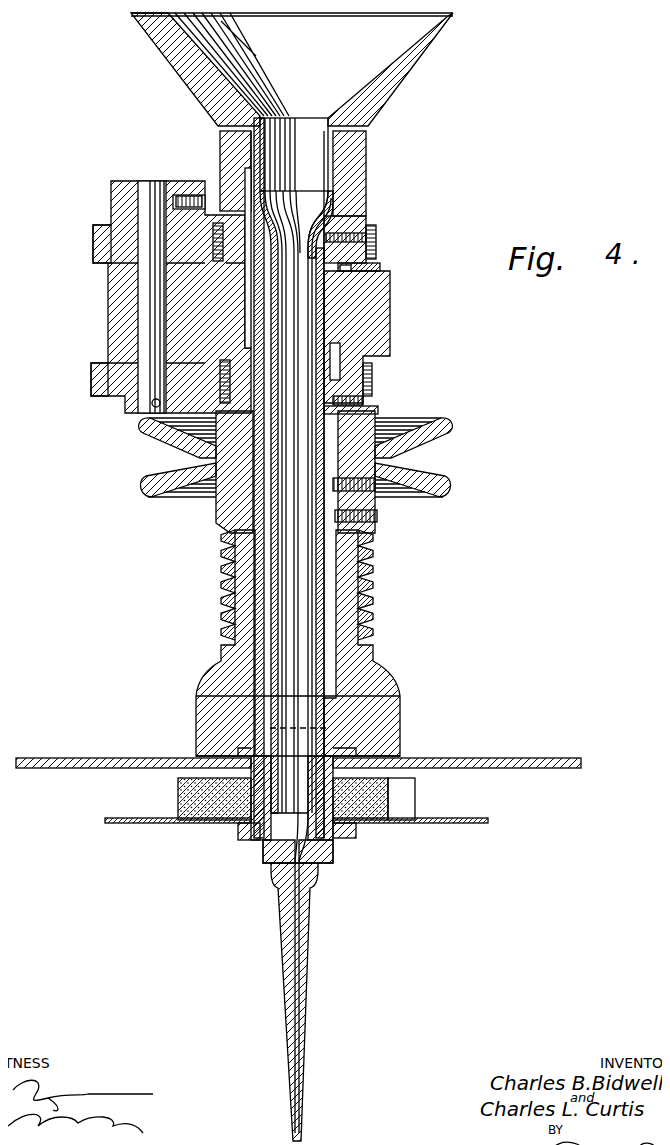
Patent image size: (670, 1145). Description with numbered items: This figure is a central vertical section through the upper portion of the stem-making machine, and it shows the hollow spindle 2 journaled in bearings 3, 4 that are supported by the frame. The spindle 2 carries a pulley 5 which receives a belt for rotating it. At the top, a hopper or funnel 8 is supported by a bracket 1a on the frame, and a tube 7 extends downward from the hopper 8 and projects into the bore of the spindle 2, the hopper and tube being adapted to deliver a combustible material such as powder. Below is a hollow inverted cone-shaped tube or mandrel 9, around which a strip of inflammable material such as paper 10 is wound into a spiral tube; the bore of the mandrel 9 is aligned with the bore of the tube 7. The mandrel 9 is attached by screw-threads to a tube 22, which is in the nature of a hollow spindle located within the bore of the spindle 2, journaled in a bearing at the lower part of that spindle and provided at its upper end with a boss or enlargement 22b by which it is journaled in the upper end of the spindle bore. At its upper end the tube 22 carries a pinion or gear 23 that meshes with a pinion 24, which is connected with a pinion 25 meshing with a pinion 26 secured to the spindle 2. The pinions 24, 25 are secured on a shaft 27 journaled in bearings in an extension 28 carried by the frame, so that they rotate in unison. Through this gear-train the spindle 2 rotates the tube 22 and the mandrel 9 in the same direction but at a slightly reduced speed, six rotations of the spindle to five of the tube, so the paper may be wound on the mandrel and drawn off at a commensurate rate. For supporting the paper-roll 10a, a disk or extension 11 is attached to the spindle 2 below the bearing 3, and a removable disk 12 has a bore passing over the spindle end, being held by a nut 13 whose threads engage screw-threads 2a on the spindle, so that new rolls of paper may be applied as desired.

The hopper or funnel 8 is at (292, 102).
The bracket 1a is at (361, 160).
The tube 7 is at (296, 527).
The shaft 27 is at (150, 168).
The pinion 24 is at (85, 232).
The extension 28 is at (100, 300).
The pinion 25 is at (83, 360).
The pinion or gear 23 is at (390, 213).
The boss or enlargement 22b is at (373, 259).
The bearing 4 is at (385, 295).
The pinion 26 is at (366, 392).
The pulley 5 is at (290, 472).
The hollow spindle 2 is at (222, 592).
The paper 10 is at (367, 612).
The bearing 3 is at (188, 715).
The screw-threads 2a is at (258, 845).
The disk or extension 11 is at (298, 750).
The paper-roll 10a is at (170, 776).
The removable disk 12 is at (296, 810).
The nut 13 is at (232, 832).
The tube 22 is at (264, 868).
The hollow inverted cone-shaped tube or mandrel 9 is at (281, 1053).